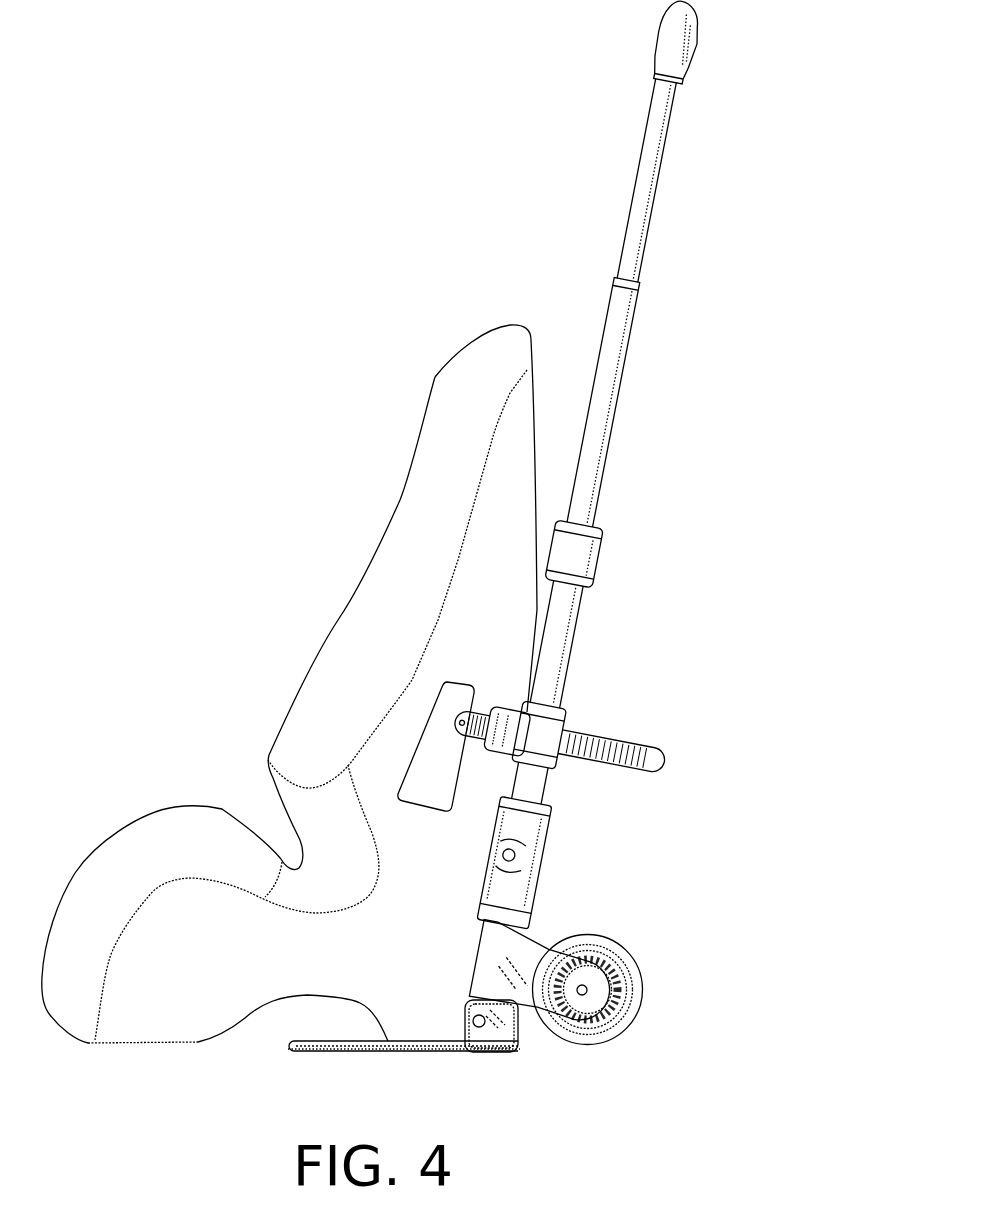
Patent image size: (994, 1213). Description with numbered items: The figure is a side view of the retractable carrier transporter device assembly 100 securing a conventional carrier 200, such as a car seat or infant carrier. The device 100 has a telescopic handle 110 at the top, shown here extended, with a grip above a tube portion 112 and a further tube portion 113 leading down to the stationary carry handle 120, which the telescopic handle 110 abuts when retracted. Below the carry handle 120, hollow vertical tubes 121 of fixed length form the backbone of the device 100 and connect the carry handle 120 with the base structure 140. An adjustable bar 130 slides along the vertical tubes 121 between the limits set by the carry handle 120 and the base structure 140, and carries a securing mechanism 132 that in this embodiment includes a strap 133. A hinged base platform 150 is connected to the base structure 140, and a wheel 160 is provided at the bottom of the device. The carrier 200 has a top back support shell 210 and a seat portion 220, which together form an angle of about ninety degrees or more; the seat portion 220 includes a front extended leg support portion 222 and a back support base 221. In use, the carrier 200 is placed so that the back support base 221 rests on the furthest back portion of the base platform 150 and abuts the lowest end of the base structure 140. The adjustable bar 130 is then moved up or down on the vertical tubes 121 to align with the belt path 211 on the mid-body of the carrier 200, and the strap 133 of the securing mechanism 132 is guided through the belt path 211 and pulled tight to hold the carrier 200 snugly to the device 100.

The retractable carrier transporter device assembly 100 is at (442, 193).
The telescopic handle 110 is at (663, 37).
The upper telescoping tube 112 is at (657, 162).
The middle telescoping tube 113 is at (628, 337).
The stationary carry handle 120 is at (580, 553).
The vertical tubes 121 is at (558, 652).
The adjustable bar 130 is at (565, 717).
The securing mechanism 132 is at (500, 727).
The strap 133 is at (634, 773).
The base structure 140 is at (523, 857).
The hinged base platform 150 is at (362, 1042).
The wheel 160 is at (612, 945).
The carrier 200 is at (318, 657).
The top back support shell 210 is at (533, 433).
The belt path 211 is at (418, 793).
The seat portion 220 is at (118, 830).
The back support base 221 is at (415, 1040).
The front extended leg support portion 222 is at (172, 1038).